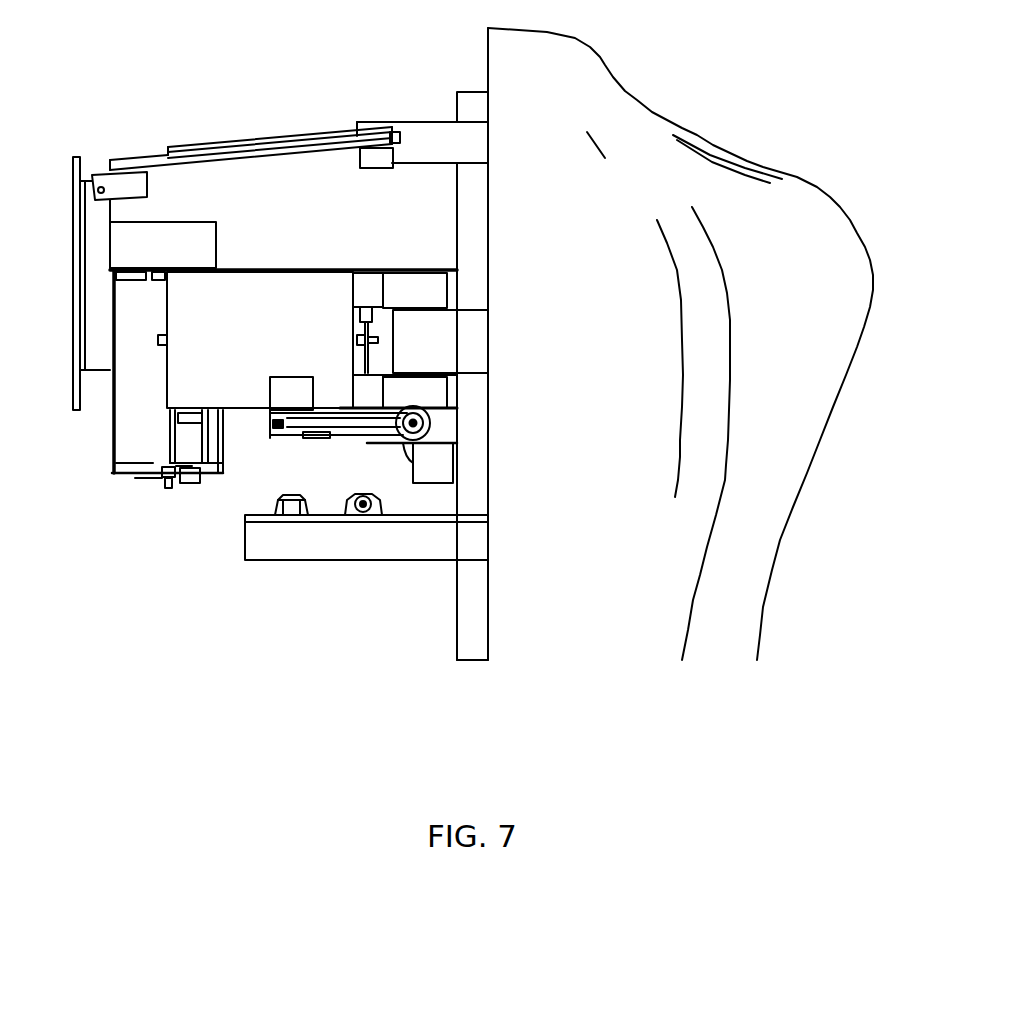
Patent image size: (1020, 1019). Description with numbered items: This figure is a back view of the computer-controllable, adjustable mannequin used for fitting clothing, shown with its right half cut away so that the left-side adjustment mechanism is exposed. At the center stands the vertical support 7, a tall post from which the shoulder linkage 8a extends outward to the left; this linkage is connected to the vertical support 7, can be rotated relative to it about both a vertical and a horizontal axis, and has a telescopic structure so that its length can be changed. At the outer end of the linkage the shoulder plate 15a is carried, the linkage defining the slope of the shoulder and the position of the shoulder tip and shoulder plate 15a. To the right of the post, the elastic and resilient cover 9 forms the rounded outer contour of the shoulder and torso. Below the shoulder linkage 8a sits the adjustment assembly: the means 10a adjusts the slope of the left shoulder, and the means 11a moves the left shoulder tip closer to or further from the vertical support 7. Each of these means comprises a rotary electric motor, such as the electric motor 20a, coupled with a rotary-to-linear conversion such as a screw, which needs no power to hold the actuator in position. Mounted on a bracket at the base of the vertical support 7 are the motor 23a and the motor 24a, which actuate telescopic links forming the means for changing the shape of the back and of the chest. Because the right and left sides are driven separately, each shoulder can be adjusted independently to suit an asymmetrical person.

The vertical support 7 is at (473, 95).
The cover 9 is at (542, 80).
The shoulder plate 15a is at (80, 148).
The shoulder linkage 8a is at (272, 137).
The means for adjusting slope of left shoulder 10a is at (150, 357).
The means for moving left shoulder tip closer to or further from vertical support 11a is at (238, 373).
The electric motor 20a is at (192, 437).
The motor 23a is at (293, 520).
The motor 24a is at (363, 517).